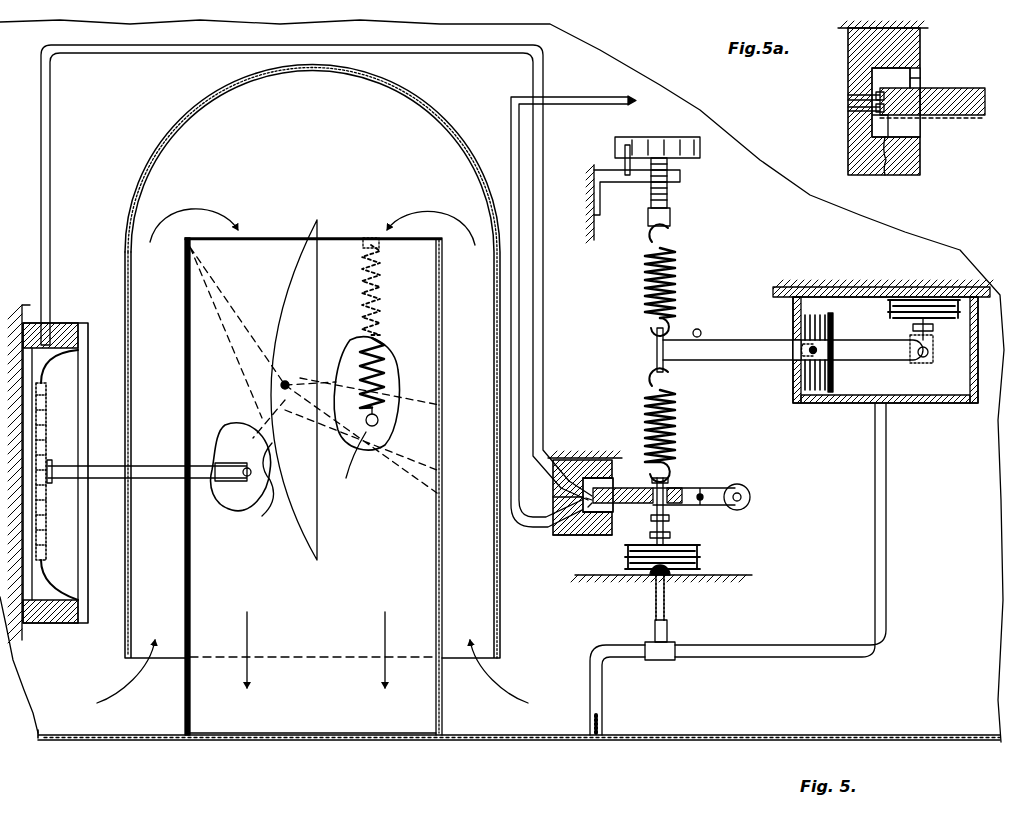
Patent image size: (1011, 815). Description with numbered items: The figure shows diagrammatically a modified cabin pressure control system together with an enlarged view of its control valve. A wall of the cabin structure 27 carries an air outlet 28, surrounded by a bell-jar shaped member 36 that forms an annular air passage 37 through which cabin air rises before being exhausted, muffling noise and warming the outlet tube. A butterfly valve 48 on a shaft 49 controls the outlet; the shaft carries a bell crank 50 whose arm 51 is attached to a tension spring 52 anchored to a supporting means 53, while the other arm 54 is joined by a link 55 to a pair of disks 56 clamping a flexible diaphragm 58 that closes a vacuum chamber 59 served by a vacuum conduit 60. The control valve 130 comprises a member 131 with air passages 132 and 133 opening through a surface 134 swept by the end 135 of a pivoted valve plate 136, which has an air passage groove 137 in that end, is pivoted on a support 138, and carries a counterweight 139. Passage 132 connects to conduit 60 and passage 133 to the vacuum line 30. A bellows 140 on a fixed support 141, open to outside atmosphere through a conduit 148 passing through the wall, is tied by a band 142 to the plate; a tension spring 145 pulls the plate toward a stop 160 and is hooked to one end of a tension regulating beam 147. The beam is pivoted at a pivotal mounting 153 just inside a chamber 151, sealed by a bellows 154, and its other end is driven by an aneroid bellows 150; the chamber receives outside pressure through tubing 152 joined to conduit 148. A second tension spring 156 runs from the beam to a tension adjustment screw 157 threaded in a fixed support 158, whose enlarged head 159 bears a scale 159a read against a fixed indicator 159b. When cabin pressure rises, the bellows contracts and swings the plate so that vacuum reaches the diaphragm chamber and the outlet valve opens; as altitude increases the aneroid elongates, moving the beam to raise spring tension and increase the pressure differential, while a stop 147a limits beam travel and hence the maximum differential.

In FIG. 5, the cabin wall 27 is at (150, 738).
In FIG. 5, the air outlet 28 is at (285, 740).
In FIG. 5, the vacuum line 30 is at (597, 96).
In FIG. 5, the bell-jar shaped member 36 is at (153, 150).
In FIG. 5, the annular air passage 37 is at (150, 292).
In FIG. 5, the valve 48 is at (293, 260).
In FIG. 5, the shaft 49 is at (280, 386).
In FIG. 5, the bell crank 50 is at (243, 438).
In FIG. 5, the arm 51 is at (356, 462).
In FIG. 5, the tension spring 52 is at (392, 344).
In FIG. 5, the supporting means 53 is at (367, 238).
In FIG. 5, the arm 54 is at (268, 497).
In FIG. 5, the link 55 is at (238, 510).
In FIG. 5, the disks 56 is at (45, 510).
In FIG. 5, the flexible diaphragm 58 is at (50, 576).
In FIG. 5, the vacuum chamber 59 is at (45, 606).
In FIG. 5, the vacuum conduit 60 is at (50, 212).
In FIG. 5, the control valve 130 is at (570, 544).
In FIG. 5A, the control valve 130 is at (930, 47).
In FIG. 5, the member 131 is at (552, 497).
In FIG. 5, the air passage 132 is at (590, 472).
In FIG. 5A, the air passage 132 is at (848, 97).
In FIG. 5, the air passage 133 is at (552, 532).
In FIG. 5A, the air passage 133 is at (848, 109).
In FIG. 5, the surface 134 is at (598, 462).
In FIG. 5A, the surface 134 is at (886, 166).
In FIG. 5, the end 135 is at (590, 530).
In FIG. 5A, the end 135 is at (852, 94).
In FIG. 5, the valve plate 136 is at (657, 482).
In FIG. 5A, the valve plate 136 is at (942, 88).
In FIG. 5, the air passage groove 137 is at (628, 506).
In FIG. 5A, the air passage groove 137 is at (940, 118).
In FIG. 5, the support 138 is at (707, 488).
In FIG. 5, the counterweight 139 is at (745, 487).
In FIG. 5, the bellows 140 is at (700, 562).
In FIG. 5, the fixed support 141 is at (748, 576).
In FIG. 5, the band 142 is at (669, 519).
In FIG. 5, the tension spring 145 is at (677, 427).
In FIG. 5, the tension regulating beam 147 is at (738, 358).
In FIG. 5, the stop 147a is at (699, 330).
In FIG. 5, the conduit 148 is at (655, 600).
In FIG. 5, the aneroid bellows 150 is at (888, 302).
In FIG. 5, the chamber 151 is at (850, 296).
In FIG. 5, the tubing 152 is at (886, 505).
In FIG. 5, the pivotal mounting 153 is at (800, 354).
In FIG. 5, the bellows 154 is at (834, 384).
In FIG. 5, the second tension spring 156 is at (676, 275).
In FIG. 5, the tension adjustment screw 157 is at (670, 190).
In FIG. 5, the fixed support 158 is at (600, 168).
In FIG. 5, the enlarged head 159 is at (700, 140).
In FIG. 5, the scale 159a is at (700, 152).
In FIG. 5, the fixed indicator 159b is at (632, 178).
In FIG. 5, the stop 160 is at (603, 458).
In FIG. 5A, the stop 160 is at (932, 86).